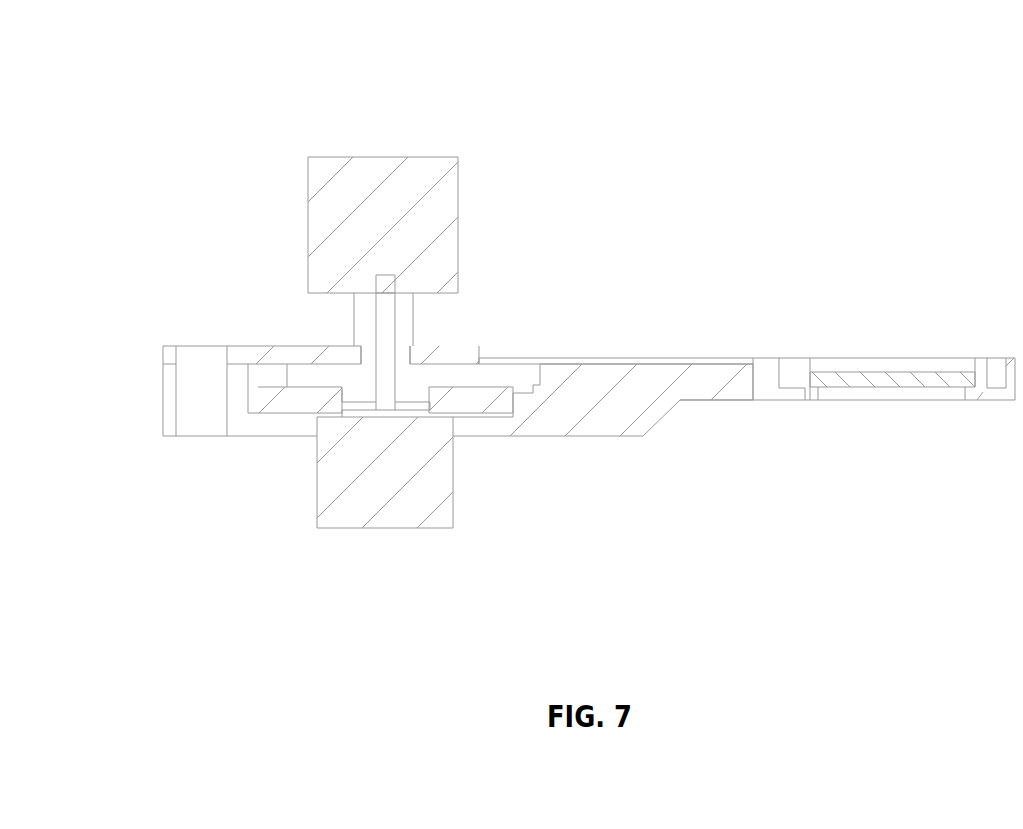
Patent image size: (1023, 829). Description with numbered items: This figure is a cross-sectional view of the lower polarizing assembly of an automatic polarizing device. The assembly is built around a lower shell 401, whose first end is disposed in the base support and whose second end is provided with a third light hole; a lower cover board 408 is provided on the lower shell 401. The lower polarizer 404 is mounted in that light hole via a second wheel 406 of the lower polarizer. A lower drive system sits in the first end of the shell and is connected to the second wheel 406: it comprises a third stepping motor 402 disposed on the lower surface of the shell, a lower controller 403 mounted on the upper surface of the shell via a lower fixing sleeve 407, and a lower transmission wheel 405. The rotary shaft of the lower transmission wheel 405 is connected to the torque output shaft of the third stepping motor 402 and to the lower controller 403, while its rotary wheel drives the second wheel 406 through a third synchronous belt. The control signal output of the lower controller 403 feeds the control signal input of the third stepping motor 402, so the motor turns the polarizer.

The lower shell 401 is at (582, 408).
The third stepping motor 402 is at (398, 486).
The lower controller 403 is at (358, 203).
The lower polarizer 404 is at (878, 378).
The lower transmission wheel 405 is at (413, 379).
The second wheel 406 is at (805, 378).
The lower fixing sleeve 407 is at (363, 325).
The lower cover board 408 is at (567, 357).